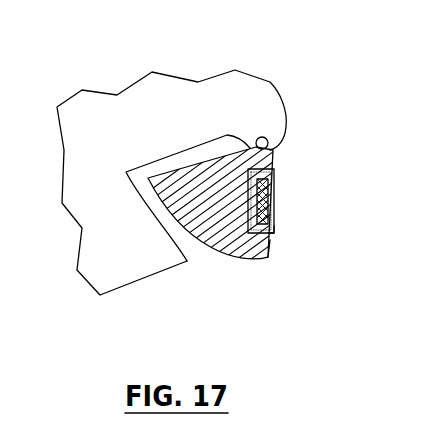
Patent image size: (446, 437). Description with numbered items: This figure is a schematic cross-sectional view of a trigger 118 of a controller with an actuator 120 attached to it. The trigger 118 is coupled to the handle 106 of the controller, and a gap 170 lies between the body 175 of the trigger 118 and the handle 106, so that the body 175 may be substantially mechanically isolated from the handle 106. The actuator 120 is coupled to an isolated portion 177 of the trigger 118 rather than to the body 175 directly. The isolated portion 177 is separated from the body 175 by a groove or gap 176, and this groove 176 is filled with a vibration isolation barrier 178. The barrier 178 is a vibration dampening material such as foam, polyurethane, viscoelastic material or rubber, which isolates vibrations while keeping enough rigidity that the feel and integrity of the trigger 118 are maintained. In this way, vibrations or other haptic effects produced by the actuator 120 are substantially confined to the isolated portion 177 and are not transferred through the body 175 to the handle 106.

The handle 106 is at (247, 92).
The gap 170 is at (185, 247).
The body of trigger 175 is at (250, 245).
The trigger 118 is at (273, 152).
The vibration isolation barrier 178 is at (277, 177).
The actuator 120 is at (272, 198).
The isolated portion of trigger 177 is at (289, 230).
The groove or gap 176 is at (283, 231).